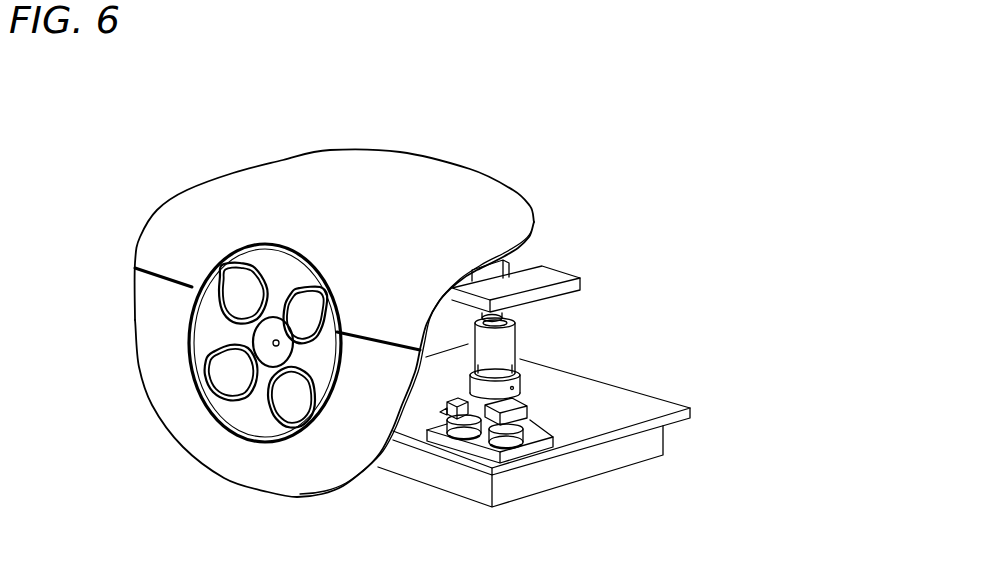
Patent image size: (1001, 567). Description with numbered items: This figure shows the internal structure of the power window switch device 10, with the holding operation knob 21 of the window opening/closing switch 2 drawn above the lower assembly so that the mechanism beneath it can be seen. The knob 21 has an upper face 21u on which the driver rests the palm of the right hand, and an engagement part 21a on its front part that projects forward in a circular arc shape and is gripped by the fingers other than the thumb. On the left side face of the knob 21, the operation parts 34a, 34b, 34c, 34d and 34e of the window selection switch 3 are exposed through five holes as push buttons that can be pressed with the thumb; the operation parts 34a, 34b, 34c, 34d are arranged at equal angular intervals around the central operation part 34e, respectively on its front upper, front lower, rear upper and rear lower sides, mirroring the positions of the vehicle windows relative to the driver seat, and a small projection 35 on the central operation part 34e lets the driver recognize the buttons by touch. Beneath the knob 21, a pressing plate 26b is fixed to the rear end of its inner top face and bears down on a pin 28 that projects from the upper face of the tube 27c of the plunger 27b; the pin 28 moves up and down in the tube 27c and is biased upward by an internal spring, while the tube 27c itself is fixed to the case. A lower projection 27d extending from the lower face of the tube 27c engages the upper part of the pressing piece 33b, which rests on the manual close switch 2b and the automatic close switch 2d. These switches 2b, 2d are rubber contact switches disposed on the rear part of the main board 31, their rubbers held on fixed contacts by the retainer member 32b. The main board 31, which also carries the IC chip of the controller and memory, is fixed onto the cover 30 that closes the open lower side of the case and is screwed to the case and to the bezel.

The power window switch device 10 is at (553, 114).
The holding operation knob 21 is at (344, 148).
The engagement part 21a is at (230, 172).
The upper face 21u is at (400, 195).
The window selection switch 3 is at (195, 330).
The operation part 34a is at (240, 287).
The operation part 34b is at (227, 375).
The operation part 34c is at (310, 313).
The operation part 34d is at (298, 400).
The operation part 34e is at (287, 353).
The small projection 35 is at (280, 344).
The pressing plate 26b is at (583, 280).
The pin 28 is at (505, 318).
The plunger 27b is at (515, 348).
The tube 27c is at (495, 371).
The lower projection 27d is at (522, 400).
The window opening/closing switch 2 is at (593, 388).
The main board 31 is at (660, 398).
The cover 30 is at (650, 460).
The retainer member 32b is at (538, 452).
The automatic close (AC) switch 2d is at (457, 437).
The manual close (MC) switch 2b is at (497, 447).
The pressing piece 33b is at (530, 414).